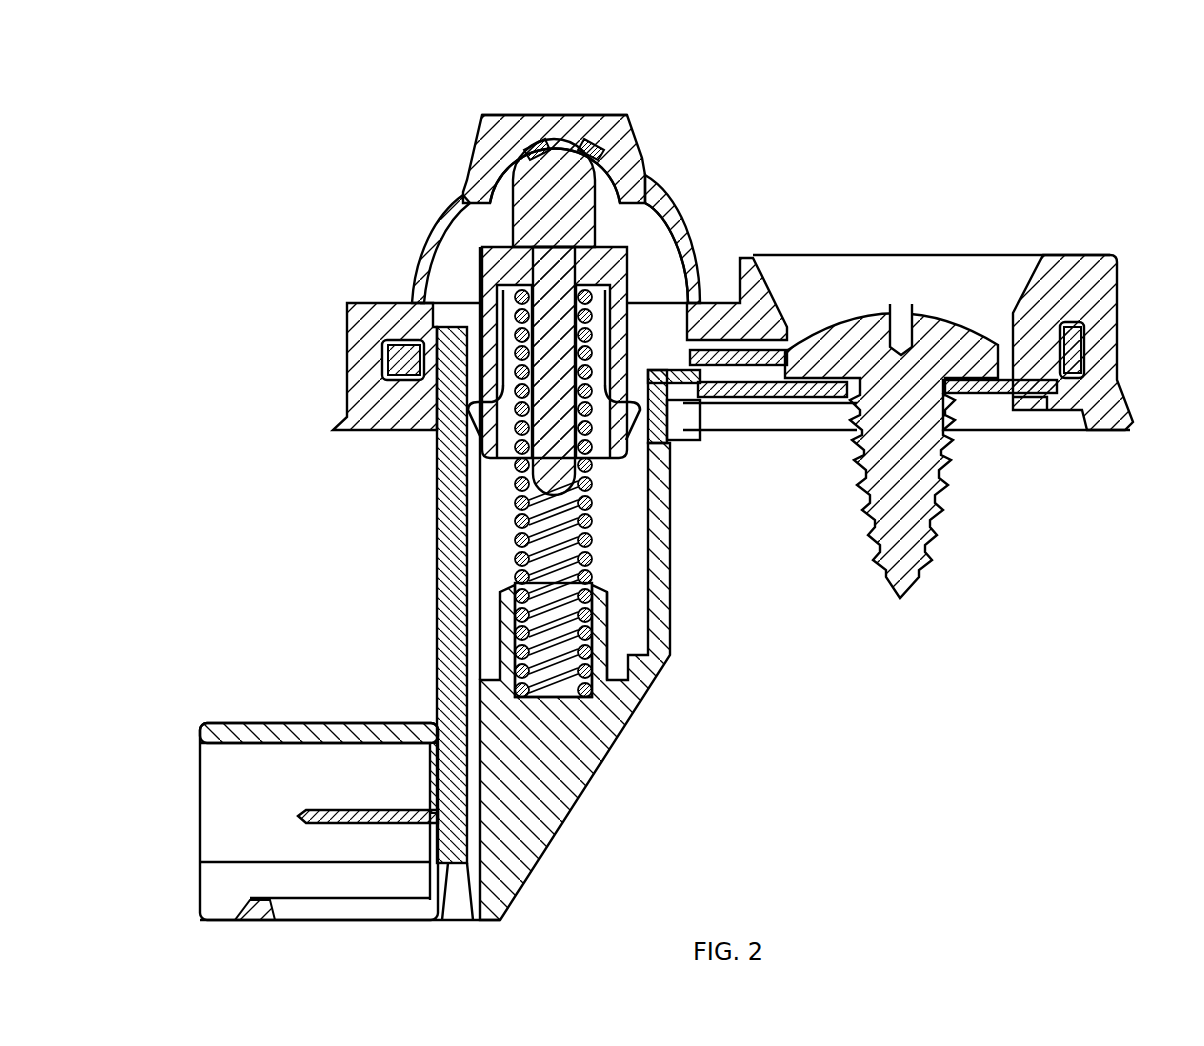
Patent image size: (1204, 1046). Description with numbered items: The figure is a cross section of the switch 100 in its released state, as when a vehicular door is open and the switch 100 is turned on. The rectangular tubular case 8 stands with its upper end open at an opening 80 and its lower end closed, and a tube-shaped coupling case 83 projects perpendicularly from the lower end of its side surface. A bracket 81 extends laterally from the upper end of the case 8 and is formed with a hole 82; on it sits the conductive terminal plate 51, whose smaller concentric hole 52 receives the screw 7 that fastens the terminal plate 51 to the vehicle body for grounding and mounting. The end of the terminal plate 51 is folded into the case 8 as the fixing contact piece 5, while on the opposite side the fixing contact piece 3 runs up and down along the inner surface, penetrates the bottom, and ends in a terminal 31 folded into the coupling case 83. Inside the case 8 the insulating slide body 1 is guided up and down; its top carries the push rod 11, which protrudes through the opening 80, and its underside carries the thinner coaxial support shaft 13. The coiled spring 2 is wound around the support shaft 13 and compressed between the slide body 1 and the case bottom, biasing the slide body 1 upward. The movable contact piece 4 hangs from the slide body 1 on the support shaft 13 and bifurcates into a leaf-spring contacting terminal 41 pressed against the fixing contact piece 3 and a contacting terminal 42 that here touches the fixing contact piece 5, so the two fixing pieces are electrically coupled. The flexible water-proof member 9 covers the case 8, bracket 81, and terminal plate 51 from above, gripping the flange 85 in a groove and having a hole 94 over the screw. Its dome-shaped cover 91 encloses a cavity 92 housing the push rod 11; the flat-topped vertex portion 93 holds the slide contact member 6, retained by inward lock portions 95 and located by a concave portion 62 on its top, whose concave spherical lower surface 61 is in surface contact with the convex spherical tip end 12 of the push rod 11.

The slide body 1 is at (655, 196).
The coiled spring 2 is at (537, 472).
The fixing contact piece 3 is at (565, 474).
The movable contact piece 4 is at (510, 284).
The fixing contact piece 5 is at (668, 383).
The slide contact member 6 is at (492, 123).
The screw 7 is at (908, 448).
The case 8 is at (668, 598).
The water-proof member 9 is at (1112, 297).
The push rod 11 is at (548, 200).
The tip end 12 is at (583, 147).
The support shaft 13 is at (592, 490).
The terminal 31 is at (345, 816).
The contacting terminal 41 is at (478, 430).
The contacting terminal 42 is at (612, 520).
The terminal plate 51 is at (702, 383).
The hole 52 is at (948, 380).
The lower surface 61 is at (594, 165).
The concave portion 62 is at (540, 146).
The opening 80 is at (465, 314).
The bracket 81 is at (1050, 402).
The hole 82 is at (975, 405).
The coupling case 83 is at (247, 757).
The flange 85 is at (392, 360).
The cover 91 is at (412, 285).
The cavity 92 is at (668, 268).
The vertex portion 93 is at (563, 117).
The hole 94 is at (880, 254).
The lock portion 95 is at (490, 196).
The switch 100 is at (1106, 122).